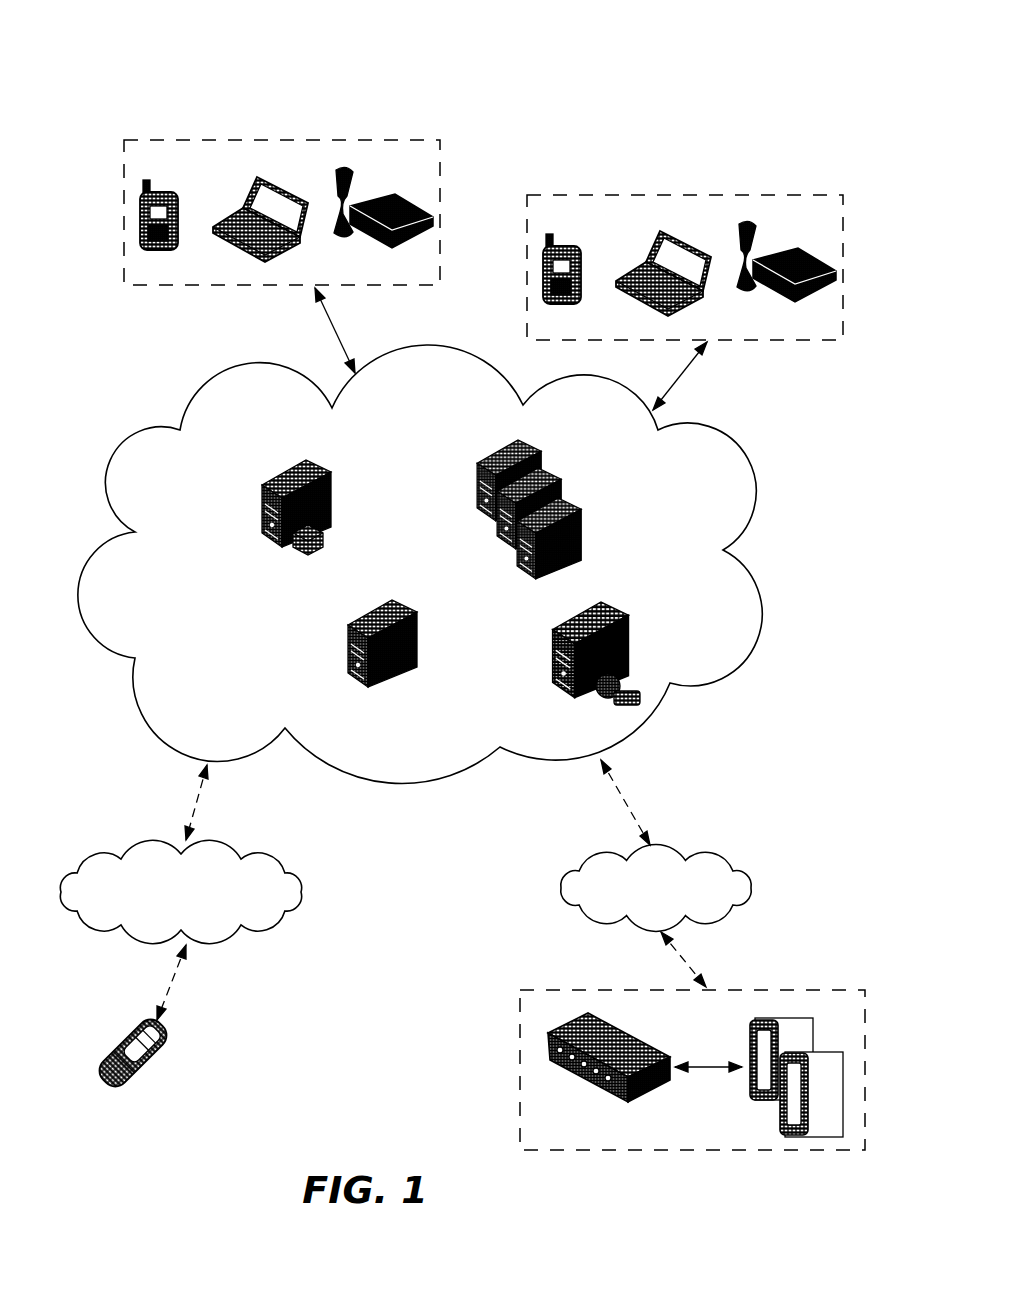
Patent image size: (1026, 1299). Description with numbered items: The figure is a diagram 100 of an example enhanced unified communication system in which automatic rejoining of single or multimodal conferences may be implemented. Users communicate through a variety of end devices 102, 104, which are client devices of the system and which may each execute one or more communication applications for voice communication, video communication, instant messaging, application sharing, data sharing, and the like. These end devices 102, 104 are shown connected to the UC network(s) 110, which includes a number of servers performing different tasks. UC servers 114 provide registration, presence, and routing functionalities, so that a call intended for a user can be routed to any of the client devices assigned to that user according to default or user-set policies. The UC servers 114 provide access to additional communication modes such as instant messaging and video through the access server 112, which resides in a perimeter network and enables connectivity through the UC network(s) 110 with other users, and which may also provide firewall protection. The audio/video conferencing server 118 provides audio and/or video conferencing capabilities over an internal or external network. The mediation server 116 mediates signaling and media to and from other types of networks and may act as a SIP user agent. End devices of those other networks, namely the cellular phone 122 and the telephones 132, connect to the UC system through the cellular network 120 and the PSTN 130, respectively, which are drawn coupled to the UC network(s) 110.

The diagram 100 is at (707, 45).
The end devices 102 is at (178, 137).
The end devices 104 is at (580, 191).
The UC network(s) 110 is at (208, 372).
The access server 112 is at (307, 450).
The UC servers 114 is at (497, 440).
The mediation server 116 is at (362, 605).
The audio/video conferencing server 118 is at (557, 608).
The cellular network 120 is at (126, 842).
The cellular phone 122 is at (117, 1040).
The PSTN 130 is at (601, 845).
The telephones 132 is at (548, 978).